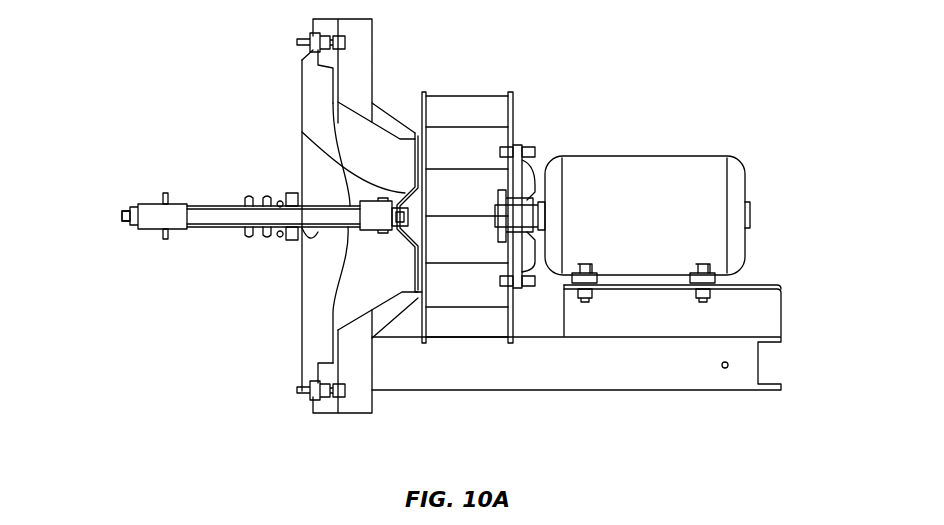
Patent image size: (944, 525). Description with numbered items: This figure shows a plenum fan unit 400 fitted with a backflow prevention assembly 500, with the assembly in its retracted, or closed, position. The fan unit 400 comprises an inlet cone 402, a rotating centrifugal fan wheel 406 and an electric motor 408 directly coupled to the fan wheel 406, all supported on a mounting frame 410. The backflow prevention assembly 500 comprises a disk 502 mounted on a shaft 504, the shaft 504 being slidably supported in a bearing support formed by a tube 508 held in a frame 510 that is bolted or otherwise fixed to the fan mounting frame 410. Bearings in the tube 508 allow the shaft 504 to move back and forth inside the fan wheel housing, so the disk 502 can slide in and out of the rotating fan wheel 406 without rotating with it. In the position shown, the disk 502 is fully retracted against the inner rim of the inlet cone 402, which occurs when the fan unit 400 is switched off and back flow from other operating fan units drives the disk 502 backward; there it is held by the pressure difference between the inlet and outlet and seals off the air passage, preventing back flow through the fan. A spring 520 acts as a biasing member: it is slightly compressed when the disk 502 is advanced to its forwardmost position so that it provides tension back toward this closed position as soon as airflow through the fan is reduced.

The fan unit 400 is at (783, 309).
The inlet cone 402 is at (365, 49).
The fan wheel 406 is at (462, 93).
The electric motor 408 is at (650, 156).
The mounting frame 410 is at (693, 392).
The backflow prevention assembly 500 is at (123, 209).
The disk 502 is at (343, 167).
The shaft 504 is at (195, 228).
The tube 508 is at (318, 232).
The frame 510 is at (308, 62).
The spring 520 is at (262, 233).